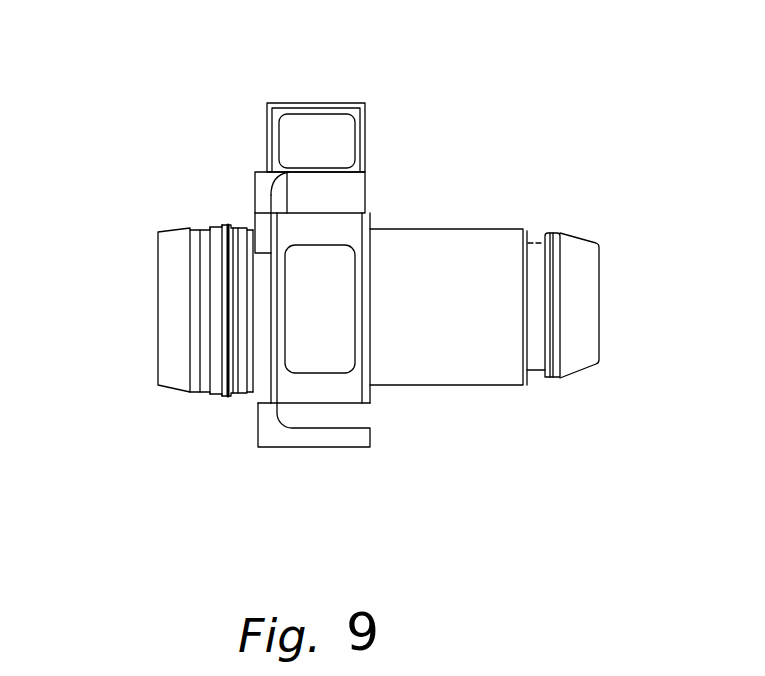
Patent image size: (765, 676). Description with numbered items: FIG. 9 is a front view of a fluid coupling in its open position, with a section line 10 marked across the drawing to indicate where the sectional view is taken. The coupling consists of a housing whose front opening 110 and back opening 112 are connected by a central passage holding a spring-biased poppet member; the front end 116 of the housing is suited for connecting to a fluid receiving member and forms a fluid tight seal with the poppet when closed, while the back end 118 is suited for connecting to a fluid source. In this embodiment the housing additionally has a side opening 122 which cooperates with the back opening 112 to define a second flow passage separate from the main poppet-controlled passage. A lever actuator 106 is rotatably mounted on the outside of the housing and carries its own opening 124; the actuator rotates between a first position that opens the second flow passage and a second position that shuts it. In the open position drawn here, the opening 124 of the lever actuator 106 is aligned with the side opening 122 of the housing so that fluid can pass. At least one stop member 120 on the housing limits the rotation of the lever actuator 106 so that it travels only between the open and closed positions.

The section line 10- 10 is at (337, 57).
The lever actuator 106 is at (362, 103).
The front opening 110 is at (599, 285).
The back opening 112 is at (157, 300).
The front end 116 is at (567, 380).
The back end 118 is at (195, 393).
The stop member 120 is at (257, 190).
The side opening 122 is at (321, 264).
The opening of the lever actuator 124 is at (329, 289).